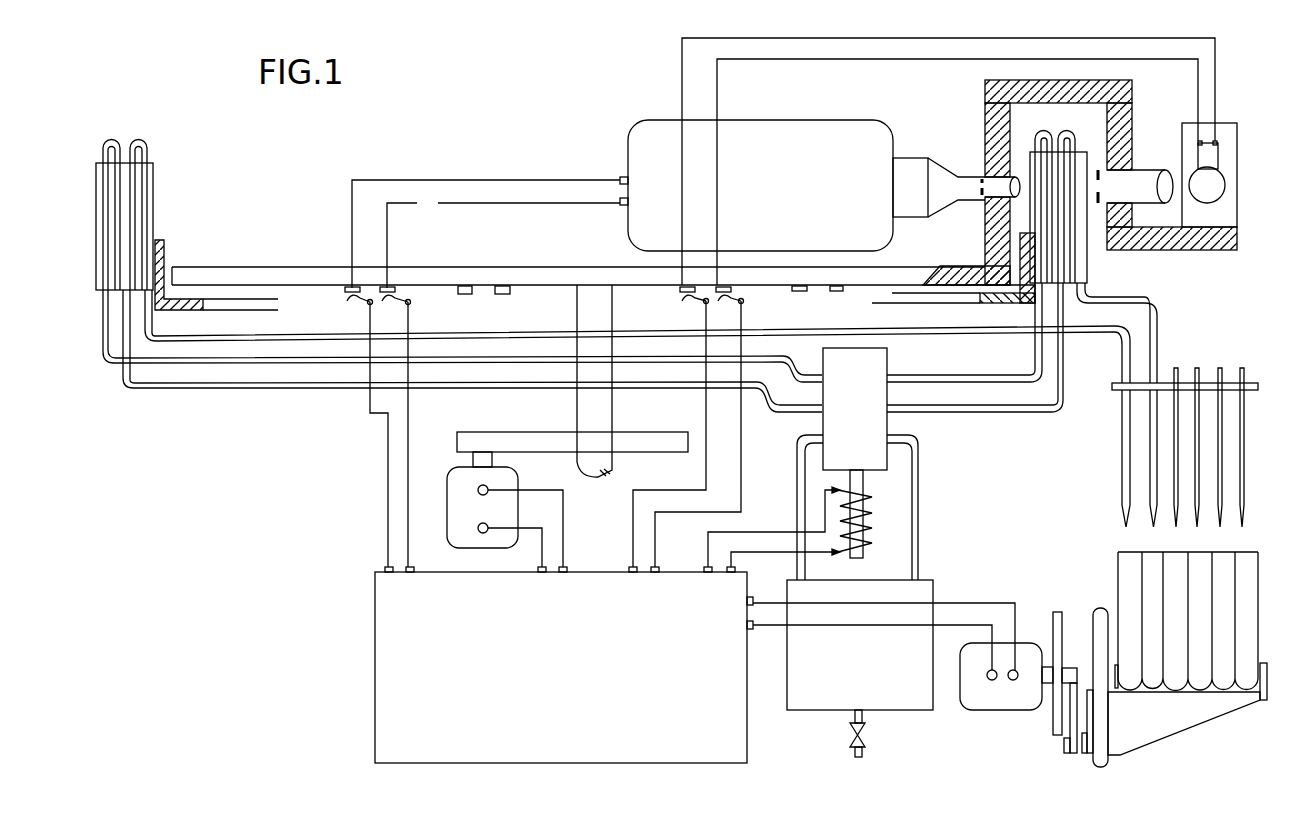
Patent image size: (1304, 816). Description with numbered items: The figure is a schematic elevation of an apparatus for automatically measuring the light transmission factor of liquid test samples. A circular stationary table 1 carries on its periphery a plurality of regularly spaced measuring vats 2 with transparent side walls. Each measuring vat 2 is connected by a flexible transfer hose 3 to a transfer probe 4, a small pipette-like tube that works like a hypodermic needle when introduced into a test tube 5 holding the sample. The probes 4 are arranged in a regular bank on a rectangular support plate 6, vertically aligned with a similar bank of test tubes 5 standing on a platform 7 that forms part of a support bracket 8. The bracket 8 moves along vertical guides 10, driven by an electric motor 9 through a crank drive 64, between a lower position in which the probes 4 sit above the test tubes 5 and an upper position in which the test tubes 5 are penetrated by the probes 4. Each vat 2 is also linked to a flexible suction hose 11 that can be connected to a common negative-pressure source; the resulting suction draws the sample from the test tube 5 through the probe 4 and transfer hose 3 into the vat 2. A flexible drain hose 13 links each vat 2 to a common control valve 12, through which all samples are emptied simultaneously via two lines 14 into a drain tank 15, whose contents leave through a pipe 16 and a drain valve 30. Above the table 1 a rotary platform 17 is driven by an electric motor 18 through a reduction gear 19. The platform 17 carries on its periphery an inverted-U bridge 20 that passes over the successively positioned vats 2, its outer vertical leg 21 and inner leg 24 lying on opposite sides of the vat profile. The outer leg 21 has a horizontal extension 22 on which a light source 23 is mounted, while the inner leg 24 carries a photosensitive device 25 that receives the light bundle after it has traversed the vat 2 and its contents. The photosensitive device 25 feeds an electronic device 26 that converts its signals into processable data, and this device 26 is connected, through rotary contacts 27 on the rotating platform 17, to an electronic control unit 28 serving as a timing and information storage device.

The stationary table 1 is at (164, 263).
The measuring vat 2 is at (152, 218).
The flexible transfer hose 3 is at (272, 336).
The transfer probe 4 is at (1153, 480).
The test tube 5 is at (1153, 557).
The support plate 6 is at (1118, 388).
The platform 7 is at (1265, 673).
The support bracket 8 is at (1157, 718).
The electric motor 9 is at (1003, 700).
The vertical guides 10 is at (1093, 612).
The flexible suction hose 11 is at (113, 372).
The control valve 12 is at (857, 427).
The flexible drain hose 13 is at (205, 390).
The lines 14 is at (797, 490).
The drain tank 15 is at (884, 645).
The pipe 16 is at (855, 718).
The rotary platform 17 is at (245, 283).
The electric motor 18 is at (450, 478).
The reduction gear 19 is at (532, 443).
The bridge 20 is at (1050, 88).
The outer vertical leg 21 is at (1120, 143).
The horizontal extension 22 is at (1193, 236).
The light source 23 is at (1190, 120).
The inner leg 24 is at (985, 112).
The photosensitive device 25 is at (970, 200).
The electronic device 26 is at (628, 150).
The rotary contacts 27 is at (388, 288).
The electronic control unit 28 is at (561, 532).
The drain valve 30 is at (864, 735).
The crank drive 64 is at (1073, 722).